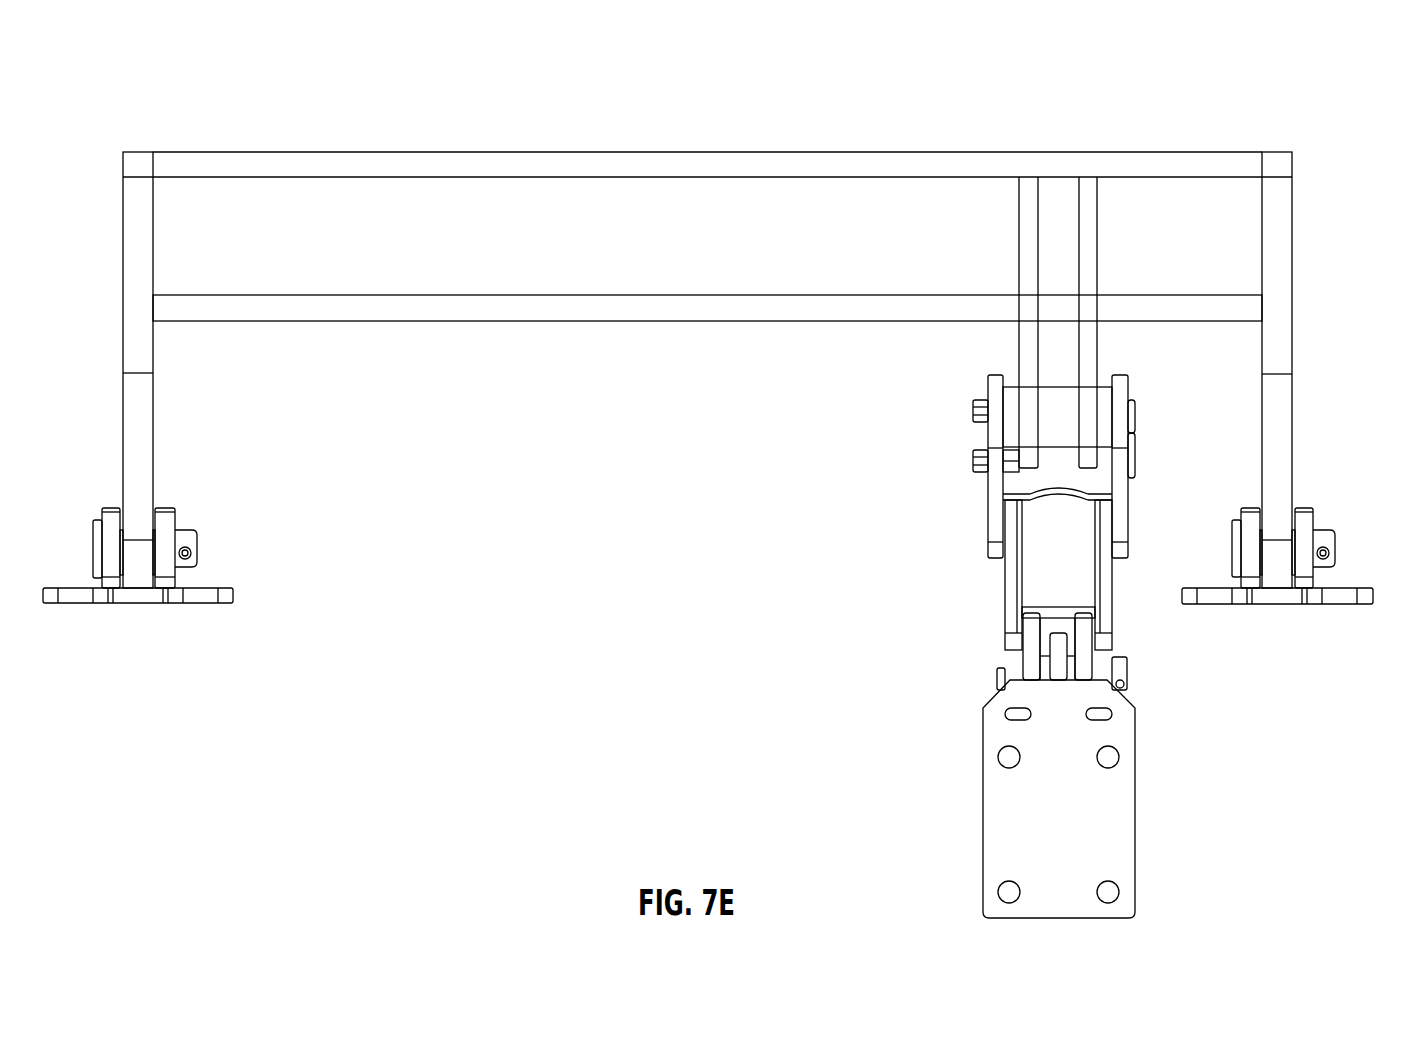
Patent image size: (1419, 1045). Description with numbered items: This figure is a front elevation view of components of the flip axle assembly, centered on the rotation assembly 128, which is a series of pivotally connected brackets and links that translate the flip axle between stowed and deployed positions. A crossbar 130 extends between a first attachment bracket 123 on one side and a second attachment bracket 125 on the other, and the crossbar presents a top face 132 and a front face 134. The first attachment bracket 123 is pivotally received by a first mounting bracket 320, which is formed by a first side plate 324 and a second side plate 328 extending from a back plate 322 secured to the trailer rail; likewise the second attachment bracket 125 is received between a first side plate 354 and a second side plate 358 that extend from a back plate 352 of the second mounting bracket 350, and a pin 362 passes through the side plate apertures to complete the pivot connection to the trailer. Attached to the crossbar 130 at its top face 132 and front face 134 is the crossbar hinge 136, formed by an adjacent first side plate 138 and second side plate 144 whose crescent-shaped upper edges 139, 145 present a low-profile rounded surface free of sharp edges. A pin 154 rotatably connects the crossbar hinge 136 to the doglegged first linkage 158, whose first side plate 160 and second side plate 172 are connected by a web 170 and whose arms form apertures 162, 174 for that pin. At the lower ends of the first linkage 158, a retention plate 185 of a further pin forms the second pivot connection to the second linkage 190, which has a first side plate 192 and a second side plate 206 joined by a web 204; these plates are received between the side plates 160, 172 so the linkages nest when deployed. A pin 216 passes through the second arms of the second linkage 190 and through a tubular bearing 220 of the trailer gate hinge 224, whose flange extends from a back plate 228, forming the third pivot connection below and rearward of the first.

The rotation assembly 128 is at (737, 70).
The crossbar 130 is at (814, 136).
The top face 132 is at (255, 210).
The front face 134 is at (258, 322).
The second attachment bracket 125 is at (130, 232).
The first attachment bracket 123 is at (1295, 228).
The second side plate 144 is at (1020, 268).
The crescent-shaped upper edge 145 is at (1025, 216).
The first side plate 138 is at (1097, 268).
The crescent-shaped upper edge 139 is at (1092, 216).
The crossbar hinge 136 is at (930, 345).
The aperture 162 is at (1128, 388).
The pin 154 is at (1137, 417).
The first linkage 158 is at (942, 493).
The second side plate 172 is at (1000, 512).
The aperture 174 is at (985, 395).
The retention plate 185 is at (1000, 440).
The first side plate 160 is at (1120, 493).
The web 170 is at (1058, 480).
The second linkage 190 is at (950, 598).
The web 204 is at (1050, 560).
The first side plate 192 is at (1103, 588).
The second side plate 206 is at (1015, 610).
The tubular bearing 220 is at (1000, 677).
The pin 216 is at (1125, 668).
The trailer gate hinge 224 is at (955, 870).
The back plate 228 is at (1003, 812).
The second mounting bracket 350 is at (120, 650).
The back plate 352 is at (205, 605).
The second side plate 358 is at (110, 508).
The first side plate 354 is at (163, 508).
The pin 362 is at (185, 540).
The first mounting bracket 320 is at (1338, 648).
The back plate 322 is at (1355, 590).
The second side plate 328 is at (1240, 508).
The first side plate 324 is at (1315, 515).